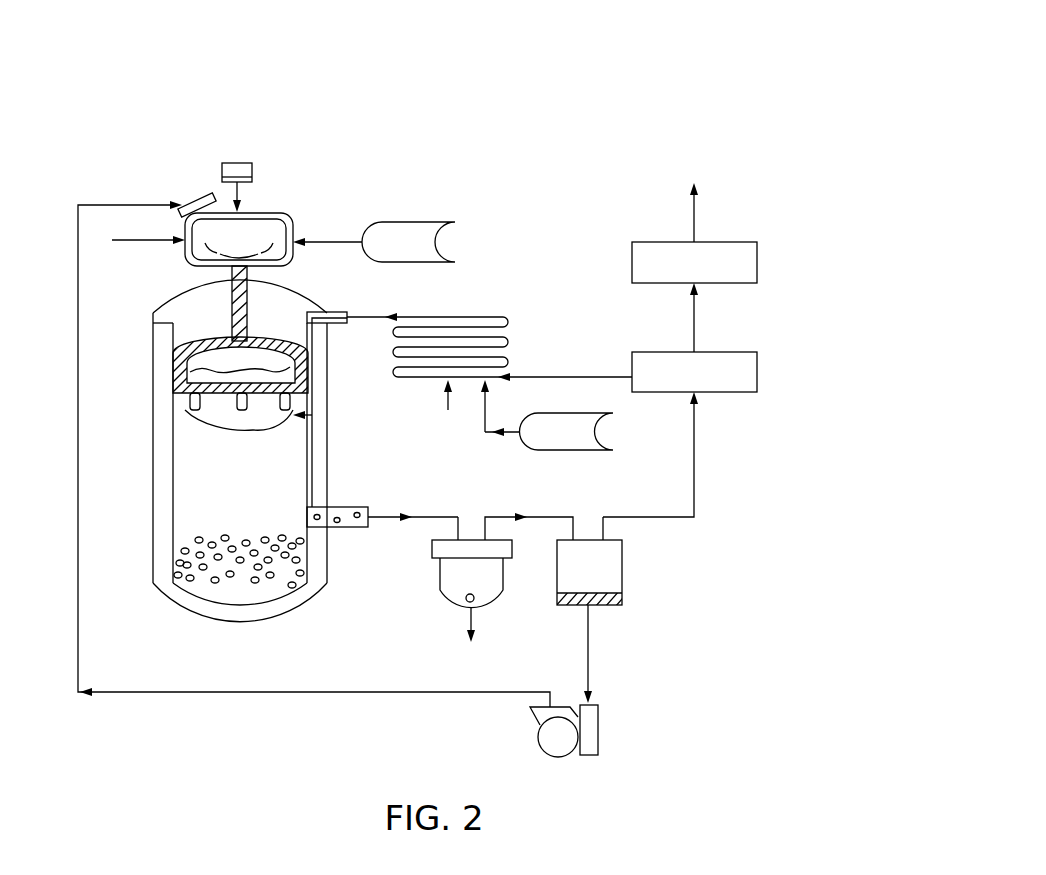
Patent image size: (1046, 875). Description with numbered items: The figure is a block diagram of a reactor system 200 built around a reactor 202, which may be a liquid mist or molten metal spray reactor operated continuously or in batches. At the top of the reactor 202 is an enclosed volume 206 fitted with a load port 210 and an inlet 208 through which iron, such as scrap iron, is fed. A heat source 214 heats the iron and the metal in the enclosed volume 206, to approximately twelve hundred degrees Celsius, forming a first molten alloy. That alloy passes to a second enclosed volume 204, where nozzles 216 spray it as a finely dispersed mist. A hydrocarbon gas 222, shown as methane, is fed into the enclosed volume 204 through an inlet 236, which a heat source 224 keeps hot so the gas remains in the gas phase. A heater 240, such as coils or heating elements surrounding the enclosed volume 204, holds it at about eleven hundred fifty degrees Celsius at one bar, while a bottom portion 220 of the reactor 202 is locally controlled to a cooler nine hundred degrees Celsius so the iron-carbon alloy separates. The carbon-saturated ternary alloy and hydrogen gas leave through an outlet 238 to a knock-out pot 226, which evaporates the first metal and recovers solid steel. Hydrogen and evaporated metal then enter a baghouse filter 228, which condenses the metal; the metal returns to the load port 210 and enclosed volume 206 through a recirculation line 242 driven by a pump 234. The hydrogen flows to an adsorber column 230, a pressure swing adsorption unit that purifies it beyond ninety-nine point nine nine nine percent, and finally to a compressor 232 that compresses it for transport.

The reactor system 200 is at (632, 77).
The reactor 202 is at (288, 289).
The enclosed volume 204 is at (286, 326).
The enclosed volume 206 is at (268, 212).
The inlet 208 is at (338, 238).
The load port 210 is at (195, 199).
The heat source 214 is at (132, 234).
The nozzles 216 is at (234, 162).
The bottom portion 220 is at (188, 588).
The hydrocarbon gas 222 is at (598, 432).
The heat source 224 is at (444, 405).
The knock-out pot 226 is at (488, 615).
The baghouse filter 228 is at (622, 551).
The adsorber column 230 is at (760, 369).
The compressor 232 is at (760, 262).
The pump 234 is at (598, 733).
The inlet 236 is at (378, 316).
The outlet 238 is at (338, 506).
The heater 240 is at (329, 378).
The recirculation line 242 is at (345, 693).